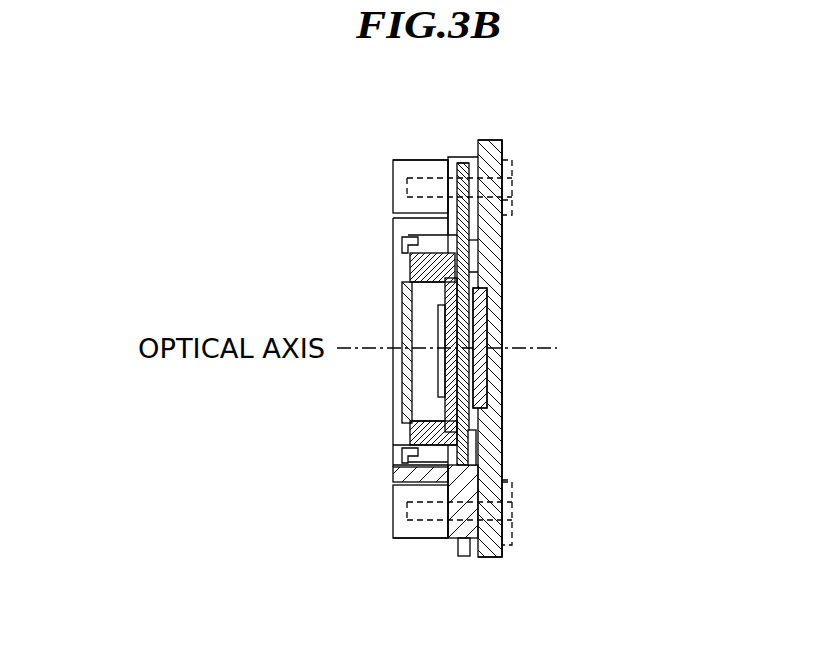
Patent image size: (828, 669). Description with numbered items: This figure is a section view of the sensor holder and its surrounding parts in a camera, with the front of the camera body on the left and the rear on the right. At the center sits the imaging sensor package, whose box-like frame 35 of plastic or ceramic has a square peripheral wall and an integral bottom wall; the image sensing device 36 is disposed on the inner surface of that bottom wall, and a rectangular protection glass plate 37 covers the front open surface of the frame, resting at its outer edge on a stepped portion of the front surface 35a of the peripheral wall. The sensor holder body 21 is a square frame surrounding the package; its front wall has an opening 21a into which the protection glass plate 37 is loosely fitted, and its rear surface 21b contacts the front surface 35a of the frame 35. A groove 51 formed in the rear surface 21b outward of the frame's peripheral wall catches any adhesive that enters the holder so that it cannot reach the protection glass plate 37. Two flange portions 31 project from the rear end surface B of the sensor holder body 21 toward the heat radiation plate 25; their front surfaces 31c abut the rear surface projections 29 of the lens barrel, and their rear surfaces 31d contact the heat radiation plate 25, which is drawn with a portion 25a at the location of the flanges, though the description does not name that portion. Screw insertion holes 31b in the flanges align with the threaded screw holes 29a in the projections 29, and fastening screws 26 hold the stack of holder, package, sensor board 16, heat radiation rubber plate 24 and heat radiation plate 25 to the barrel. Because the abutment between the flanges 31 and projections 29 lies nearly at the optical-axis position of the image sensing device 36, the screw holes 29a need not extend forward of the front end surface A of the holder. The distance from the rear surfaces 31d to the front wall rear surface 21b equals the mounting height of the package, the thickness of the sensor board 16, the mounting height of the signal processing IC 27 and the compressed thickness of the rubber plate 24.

The sensor board 16 is at (502, 433).
The sensor holder body 21 is at (393, 235).
The opening 21a is at (410, 266).
The rear surface 21b is at (418, 162).
The heat radiation rubber plate 24 is at (502, 362).
The heat radiation plate 25 is at (502, 333).
The yoke plate projection 25a is at (513, 200).
The fastening screws 26 is at (513, 184).
The signal processing IC 27 is at (478, 425).
The rear surface projections 29 is at (392, 175).
The threaded screw holes 29a is at (403, 158).
The flange portions 31 is at (470, 558).
The screw insertion holes 31b is at (458, 160).
The front surfaces 31c is at (446, 157).
The rear surfaces 31d is at (503, 166).
The box-like frame 35 is at (460, 276).
The front surface 35a is at (403, 440).
The image sensing device 36 is at (487, 318).
The protection glass plate 37 is at (405, 343).
The groove 51 is at (403, 240).
The front end surface A is at (395, 388).
The rear end surface B is at (470, 240).